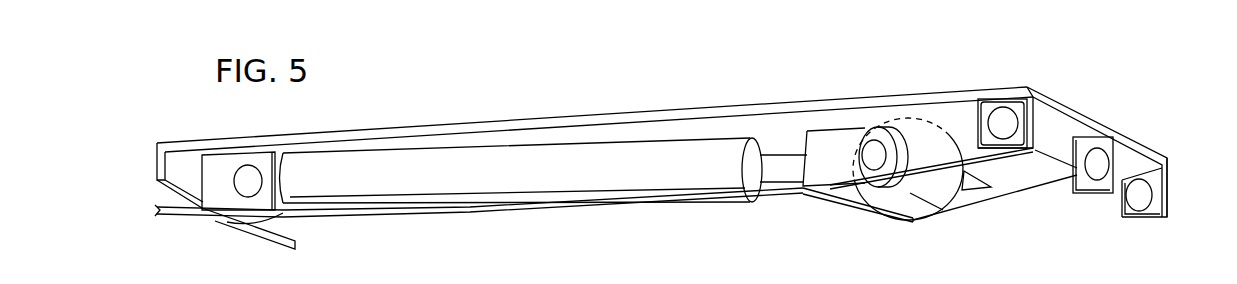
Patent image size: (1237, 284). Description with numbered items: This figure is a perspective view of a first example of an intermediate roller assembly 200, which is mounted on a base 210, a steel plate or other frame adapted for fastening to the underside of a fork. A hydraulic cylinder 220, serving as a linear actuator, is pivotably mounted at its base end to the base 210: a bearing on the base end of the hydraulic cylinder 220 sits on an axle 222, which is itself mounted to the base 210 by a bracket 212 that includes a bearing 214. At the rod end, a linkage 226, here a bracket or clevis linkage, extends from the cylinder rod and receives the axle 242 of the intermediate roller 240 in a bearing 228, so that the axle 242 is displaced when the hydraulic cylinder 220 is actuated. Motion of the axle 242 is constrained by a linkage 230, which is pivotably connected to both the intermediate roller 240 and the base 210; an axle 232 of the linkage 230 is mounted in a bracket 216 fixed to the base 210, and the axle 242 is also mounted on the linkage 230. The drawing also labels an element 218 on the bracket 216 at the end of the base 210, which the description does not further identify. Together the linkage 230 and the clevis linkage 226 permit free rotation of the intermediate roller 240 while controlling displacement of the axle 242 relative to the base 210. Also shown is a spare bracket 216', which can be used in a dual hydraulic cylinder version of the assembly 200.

The intermediate roller assembly 200 is at (1167, 140).
The base 210 is at (812, 102).
The bracket 212 is at (225, 197).
The bearing 214 is at (238, 168).
The bracket 216 is at (1088, 168).
The spare bracket 216' is at (1117, 204).
The mounting plate 218 is at (1000, 127).
The hydraulic cylinder 220 is at (487, 167).
The axle 222 is at (248, 178).
The linkage 226 is at (822, 170).
The bearing 228 is at (875, 172).
The linkage 230 is at (1023, 165).
The axle 232 is at (997, 122).
The intermediate roller 240 is at (902, 203).
The axle 242 is at (873, 141).